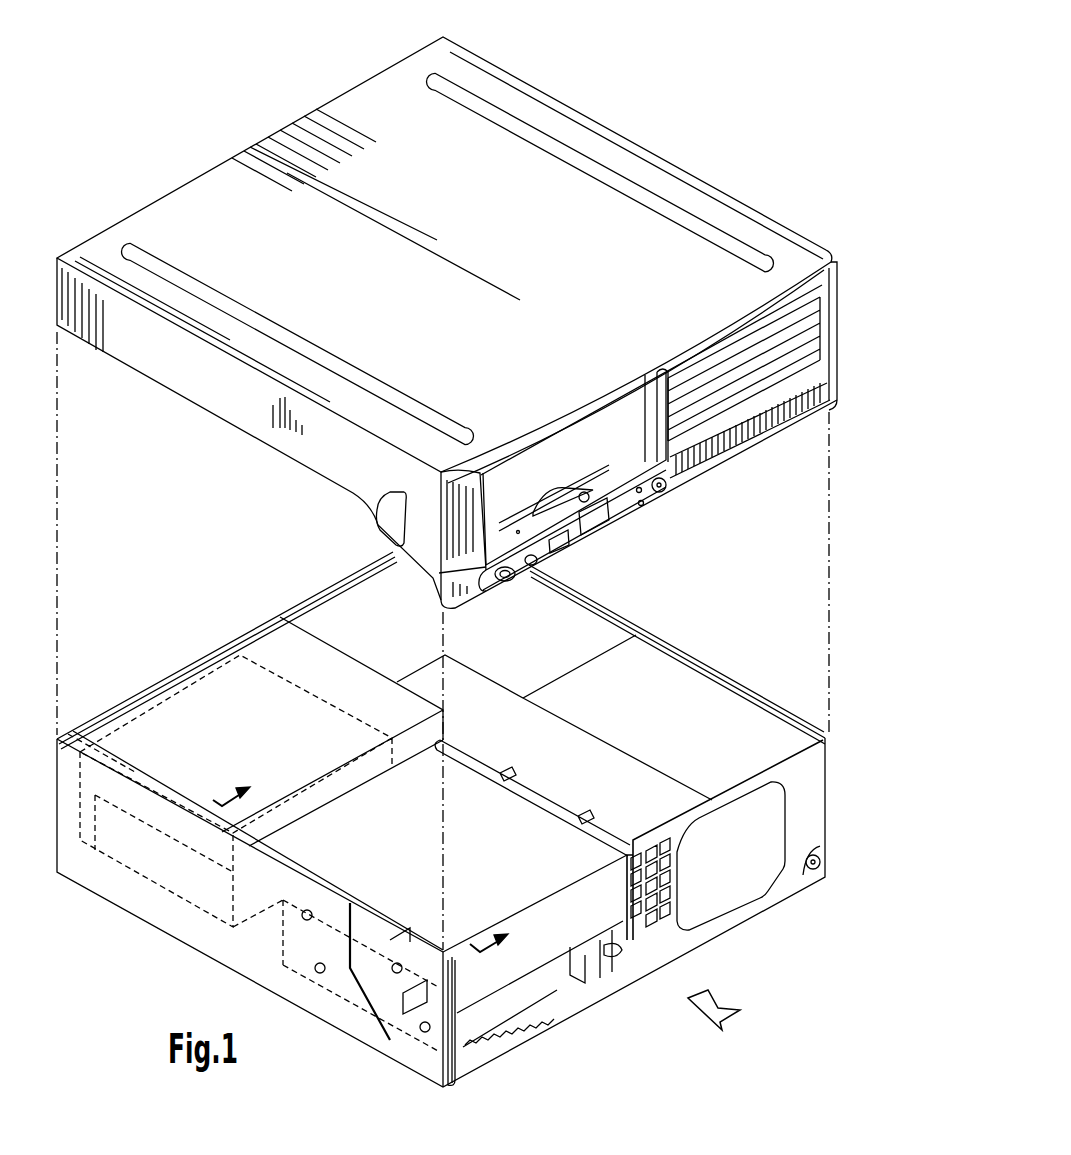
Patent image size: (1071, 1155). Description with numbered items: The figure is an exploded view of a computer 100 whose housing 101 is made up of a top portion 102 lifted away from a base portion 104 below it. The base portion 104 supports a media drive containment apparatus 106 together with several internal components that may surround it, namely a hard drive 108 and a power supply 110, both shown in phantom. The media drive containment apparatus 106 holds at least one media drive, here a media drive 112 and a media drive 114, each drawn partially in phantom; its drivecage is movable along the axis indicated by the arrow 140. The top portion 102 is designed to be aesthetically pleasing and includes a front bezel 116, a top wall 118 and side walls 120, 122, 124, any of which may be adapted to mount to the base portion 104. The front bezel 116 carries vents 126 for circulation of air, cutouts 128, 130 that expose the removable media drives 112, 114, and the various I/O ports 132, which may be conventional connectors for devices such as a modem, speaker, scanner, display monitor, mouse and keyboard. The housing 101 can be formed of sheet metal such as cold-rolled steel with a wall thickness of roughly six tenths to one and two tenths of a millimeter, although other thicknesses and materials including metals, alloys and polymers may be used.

The computer 100 is at (148, 80).
The housing 101 is at (138, 178).
The top portion 102 is at (212, 452).
The base portion 104 is at (188, 622).
The media drive containment apparatus 106 is at (538, 1050).
The hard drive 108 is at (128, 838).
The power supply 110 is at (130, 793).
The media drive 112 is at (277, 887).
The media drive 114 is at (295, 943).
The front bezel 116 is at (835, 292).
The top wall 118 is at (718, 213).
The side wall 120 is at (570, 63).
The side wall 122 is at (392, 72).
The side wall 124 is at (100, 300).
The vents 126 is at (777, 345).
The cutout 128 is at (607, 433).
The cutout 130 is at (557, 503).
The I/O ports 132 is at (577, 565).
The arrow 140 is at (698, 1000).